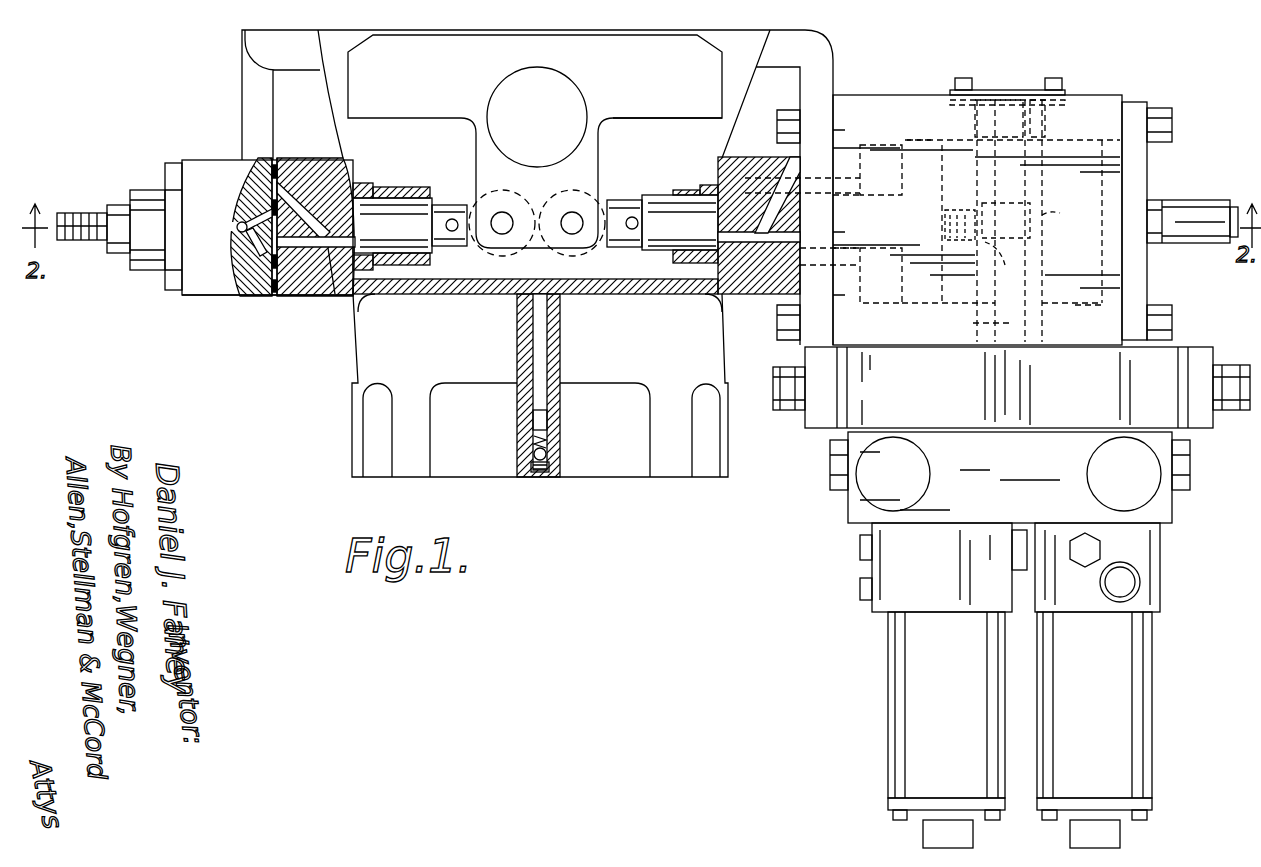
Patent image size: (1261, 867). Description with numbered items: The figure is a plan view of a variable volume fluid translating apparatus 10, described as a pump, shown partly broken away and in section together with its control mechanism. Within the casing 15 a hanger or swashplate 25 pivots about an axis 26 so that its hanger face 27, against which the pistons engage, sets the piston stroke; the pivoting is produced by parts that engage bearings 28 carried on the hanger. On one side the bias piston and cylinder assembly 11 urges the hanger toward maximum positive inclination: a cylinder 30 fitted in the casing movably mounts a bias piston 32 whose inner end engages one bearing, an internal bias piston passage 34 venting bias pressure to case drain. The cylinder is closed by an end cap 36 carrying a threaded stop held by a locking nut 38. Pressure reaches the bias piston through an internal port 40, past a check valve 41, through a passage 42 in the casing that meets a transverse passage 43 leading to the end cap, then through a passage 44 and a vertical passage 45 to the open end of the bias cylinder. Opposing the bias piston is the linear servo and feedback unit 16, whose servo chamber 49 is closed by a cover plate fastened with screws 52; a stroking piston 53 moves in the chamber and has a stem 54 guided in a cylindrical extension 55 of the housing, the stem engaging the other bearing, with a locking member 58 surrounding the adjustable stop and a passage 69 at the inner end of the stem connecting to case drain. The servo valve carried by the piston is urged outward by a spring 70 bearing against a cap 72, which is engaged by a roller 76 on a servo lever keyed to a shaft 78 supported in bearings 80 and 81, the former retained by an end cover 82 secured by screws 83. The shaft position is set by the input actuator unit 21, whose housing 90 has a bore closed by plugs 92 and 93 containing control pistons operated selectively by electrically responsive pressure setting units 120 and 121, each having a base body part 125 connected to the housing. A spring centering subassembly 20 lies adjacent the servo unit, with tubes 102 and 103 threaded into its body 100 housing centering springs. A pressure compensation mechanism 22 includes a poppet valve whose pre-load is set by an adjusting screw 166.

The fluid translating apparatus 10 is at (329, 383).
The bias piston and cylinder assembly 11 is at (204, 316).
The casing 15 is at (296, 296).
The linear servo and feedback unit 16 is at (1078, 250).
The spring centering subassembly 20 is at (1201, 335).
The input actuator unit 21 is at (1197, 526).
The pressure compensation mechanism 22 is at (939, 475).
The hanger 25 is at (634, 105).
The axis 26 is at (538, 118).
The hanger face 27 is at (412, 115).
The bearings 28 is at (578, 246).
The cylinder 30 is at (418, 192).
The bias piston 32 is at (416, 227).
The internal bias piston passage 34 is at (452, 231).
The end cap 36 is at (210, 168).
The locking nut 38 is at (116, 207).
The internal port 40 is at (540, 474).
The check valve 41 is at (551, 442).
The passage 42 is at (537, 329).
The transverse passage 43 is at (318, 295).
The passage 44 is at (250, 243).
The vertical passage 45 is at (232, 226).
The servo chamber 49 is at (1075, 305).
The screws 52 is at (1163, 112).
The stroking piston 53 is at (918, 140).
The stem 54 is at (705, 233).
The cylindrical extension 55 is at (690, 188).
The locking member 58 is at (1192, 208).
The passage 69 is at (632, 229).
The spring 70 is at (957, 210).
The cap 72 is at (990, 248).
The roller 76 is at (1043, 213).
The shaft 78 is at (977, 124).
The bearing 80 is at (1047, 117).
The bearing 81 is at (973, 325).
The end cover 82 is at (1010, 92).
The screws 83 is at (967, 83).
The housing 90 is at (1160, 539).
The plug 92 is at (829, 491).
The plug 93 is at (1183, 465).
The body 100 is at (945, 385).
The tube 102 is at (787, 409).
The tube 103 is at (1238, 410).
The electrically responsive pressure setting unit 120 is at (882, 787).
The electrically responsive pressure setting unit 121 is at (1160, 773).
The base body part 125 is at (880, 599).
The adjusting screw 166 is at (893, 498).